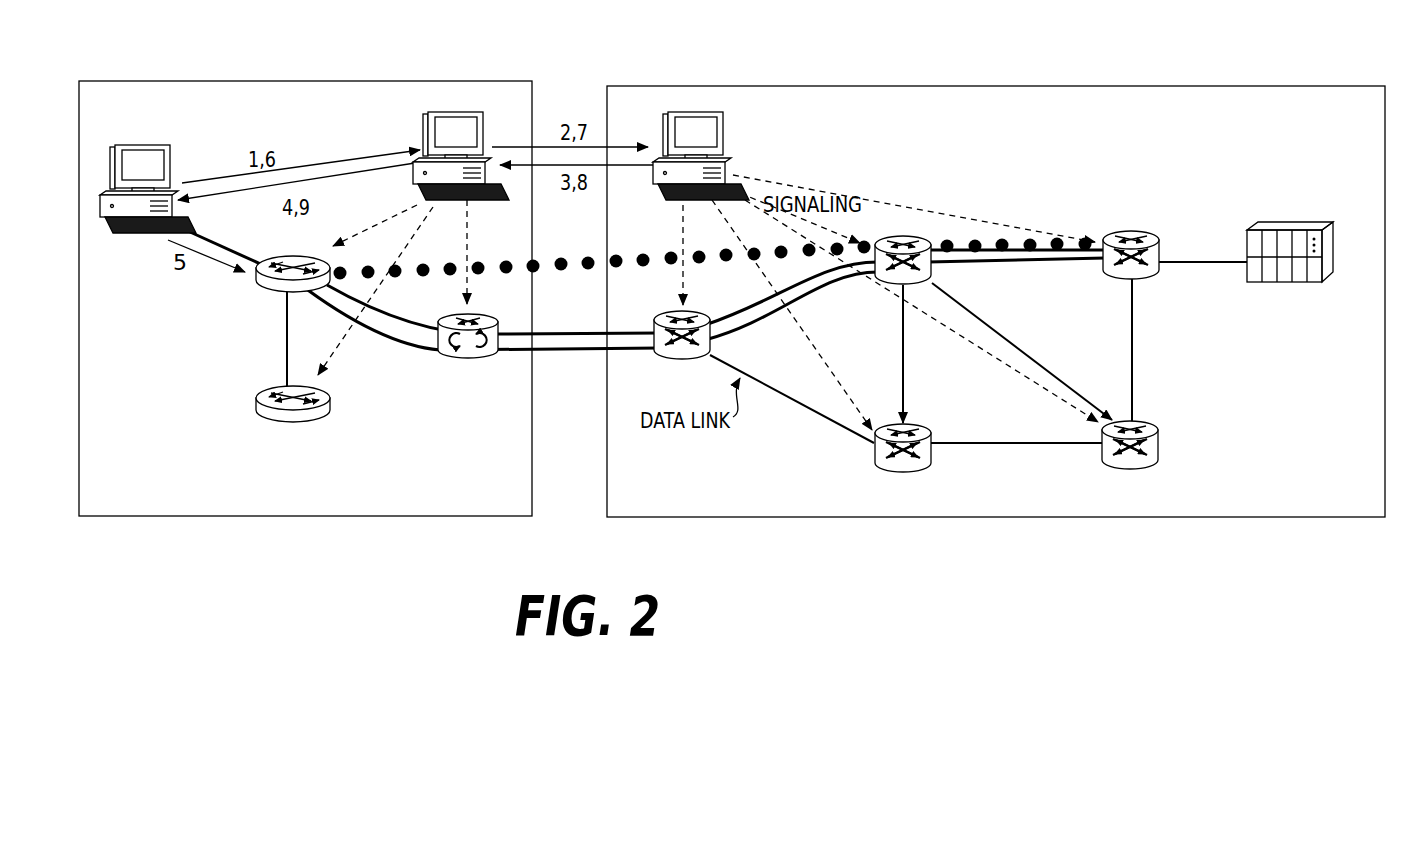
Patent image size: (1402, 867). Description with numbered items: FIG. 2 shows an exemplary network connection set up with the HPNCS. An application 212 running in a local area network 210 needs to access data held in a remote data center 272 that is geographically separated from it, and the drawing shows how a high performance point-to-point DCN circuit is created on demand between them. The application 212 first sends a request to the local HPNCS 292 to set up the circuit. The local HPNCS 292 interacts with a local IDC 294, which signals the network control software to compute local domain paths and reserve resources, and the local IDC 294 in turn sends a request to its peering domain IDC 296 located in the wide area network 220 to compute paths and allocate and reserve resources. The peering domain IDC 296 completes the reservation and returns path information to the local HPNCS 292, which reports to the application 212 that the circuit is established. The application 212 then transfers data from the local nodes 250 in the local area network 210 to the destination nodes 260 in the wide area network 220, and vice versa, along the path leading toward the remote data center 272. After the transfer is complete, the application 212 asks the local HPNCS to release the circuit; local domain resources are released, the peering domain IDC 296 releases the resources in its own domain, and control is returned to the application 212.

The local area network 210 is at (298, 97).
The application 212 is at (222, 120).
The wide area network 220 is at (1227, 103).
The local nodes 250 is at (267, 395).
The destination nodes 260 is at (670, 310).
The remote data center 272 is at (1337, 237).
The local HPNCS 292 is at (392, 98).
The local IDC 294 is at (510, 96).
The peering domain IDC 296 is at (722, 130).